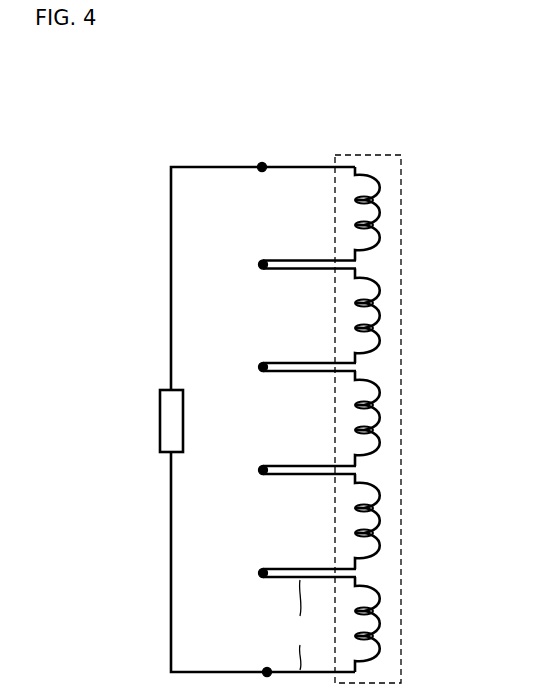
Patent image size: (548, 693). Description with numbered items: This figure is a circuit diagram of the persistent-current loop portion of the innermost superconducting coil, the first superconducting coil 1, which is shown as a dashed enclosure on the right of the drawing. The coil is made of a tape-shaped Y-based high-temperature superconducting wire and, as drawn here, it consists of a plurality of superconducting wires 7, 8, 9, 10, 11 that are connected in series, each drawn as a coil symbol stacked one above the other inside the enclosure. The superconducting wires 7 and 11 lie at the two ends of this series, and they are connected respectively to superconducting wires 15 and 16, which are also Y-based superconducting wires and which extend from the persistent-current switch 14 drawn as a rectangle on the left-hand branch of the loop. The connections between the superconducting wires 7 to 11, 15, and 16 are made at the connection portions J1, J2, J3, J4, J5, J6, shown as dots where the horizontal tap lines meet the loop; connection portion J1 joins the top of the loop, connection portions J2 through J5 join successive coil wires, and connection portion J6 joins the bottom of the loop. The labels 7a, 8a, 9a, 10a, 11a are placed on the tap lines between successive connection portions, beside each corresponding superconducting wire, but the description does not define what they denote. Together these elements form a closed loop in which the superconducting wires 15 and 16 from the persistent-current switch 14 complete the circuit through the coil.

The first superconducting coil 1 is at (401, 155).
The superconducting wire 7 is at (380, 211).
The superconducting wire 8 is at (380, 316).
The superconducting wire 9 is at (380, 418).
The superconducting wire 10 is at (380, 521).
The superconducting wire 11 is at (380, 622).
The first coil section 7a is at (300, 169).
The second coil section 8a is at (302, 272).
The third coil section 9a is at (300, 375).
The fourth coil section 10a is at (302, 478).
The fifth coil section 11a is at (297, 625).
The persistent-current switch 14 is at (160, 390).
The superconducting wire 15 is at (169, 272).
The superconducting wire 16 is at (169, 575).
The connection portion J1 is at (259, 163).
The connection portion J2 is at (260, 262).
The connection portion J3 is at (260, 365).
The connection portion J4 is at (260, 468).
The connection portion J5 is at (260, 571).
The connection portion J6 is at (264, 669).